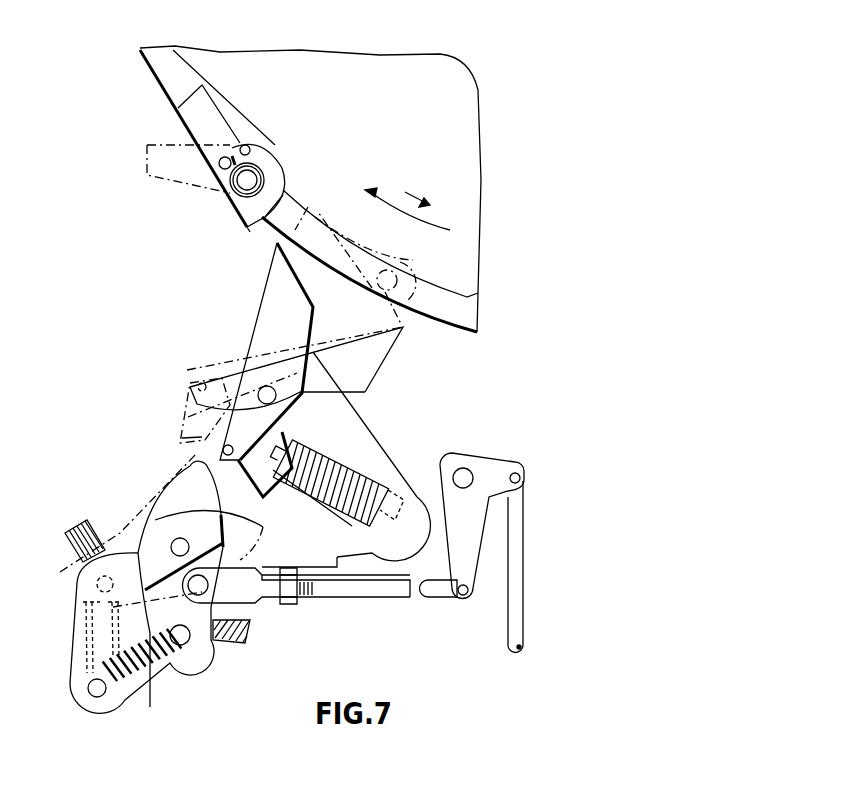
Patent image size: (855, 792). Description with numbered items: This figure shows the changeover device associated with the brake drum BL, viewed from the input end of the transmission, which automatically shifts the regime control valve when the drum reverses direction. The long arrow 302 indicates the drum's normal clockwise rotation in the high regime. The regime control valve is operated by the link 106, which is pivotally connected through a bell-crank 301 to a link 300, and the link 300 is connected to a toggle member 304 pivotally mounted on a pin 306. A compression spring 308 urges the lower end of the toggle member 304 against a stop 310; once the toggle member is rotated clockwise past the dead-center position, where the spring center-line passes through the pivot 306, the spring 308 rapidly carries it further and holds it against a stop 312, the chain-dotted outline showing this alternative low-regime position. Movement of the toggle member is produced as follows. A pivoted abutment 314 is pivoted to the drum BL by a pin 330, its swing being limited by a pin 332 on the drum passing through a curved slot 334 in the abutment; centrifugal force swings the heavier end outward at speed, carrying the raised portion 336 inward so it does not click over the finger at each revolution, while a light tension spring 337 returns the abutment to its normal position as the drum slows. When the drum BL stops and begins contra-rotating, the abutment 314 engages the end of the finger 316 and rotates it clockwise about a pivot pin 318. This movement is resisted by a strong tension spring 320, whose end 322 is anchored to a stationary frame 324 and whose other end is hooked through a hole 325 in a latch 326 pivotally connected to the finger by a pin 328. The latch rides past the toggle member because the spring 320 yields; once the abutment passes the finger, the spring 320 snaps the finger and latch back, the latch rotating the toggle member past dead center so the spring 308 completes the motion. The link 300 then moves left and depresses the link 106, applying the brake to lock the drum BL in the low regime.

The long arrow 302 is at (448, 231).
The brake drum BL is at (472, 178).
The pivoted abutment 314 is at (213, 107).
The pin 330 is at (230, 193).
The pin 332 is at (222, 168).
The curved slot 334 is at (246, 147).
The raised portion 336 is at (248, 230).
The light tension spring 337 is at (279, 183).
The finger 316 is at (268, 292).
The pivot pin 318 is at (310, 348).
The pin 328 is at (195, 450).
The strong tension spring 320 is at (342, 463).
The end of tension spring 322 is at (396, 500).
The stationary frame 324 is at (385, 555).
The hole 325 is at (290, 433).
The latch 326 is at (272, 500).
The pin 306 is at (172, 541).
The toggle member 304 is at (188, 658).
The compression spring 308 is at (150, 707).
The stop 312 is at (83, 550).
The stop 310 is at (223, 643).
The link 300 is at (363, 597).
The bell-crank 301 is at (482, 460).
The link 106 is at (510, 630).